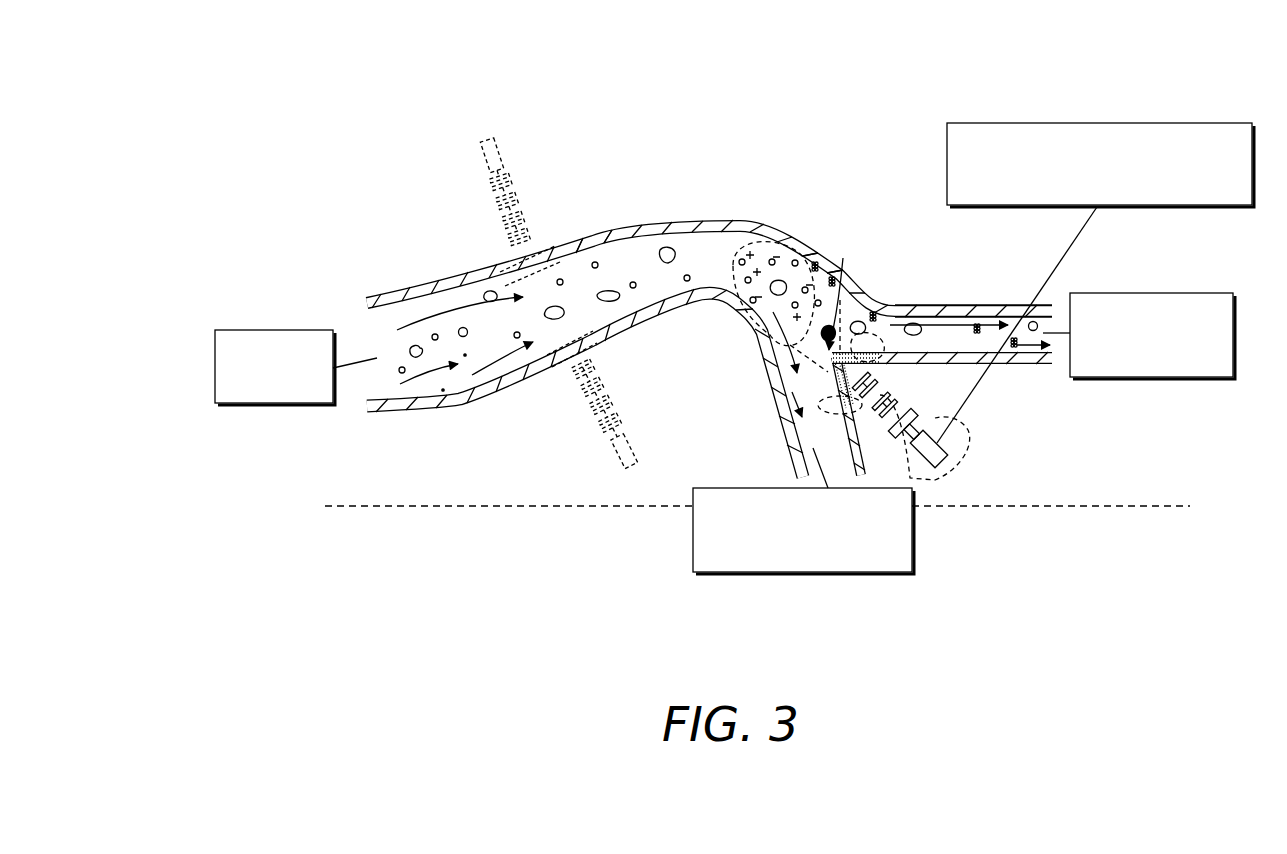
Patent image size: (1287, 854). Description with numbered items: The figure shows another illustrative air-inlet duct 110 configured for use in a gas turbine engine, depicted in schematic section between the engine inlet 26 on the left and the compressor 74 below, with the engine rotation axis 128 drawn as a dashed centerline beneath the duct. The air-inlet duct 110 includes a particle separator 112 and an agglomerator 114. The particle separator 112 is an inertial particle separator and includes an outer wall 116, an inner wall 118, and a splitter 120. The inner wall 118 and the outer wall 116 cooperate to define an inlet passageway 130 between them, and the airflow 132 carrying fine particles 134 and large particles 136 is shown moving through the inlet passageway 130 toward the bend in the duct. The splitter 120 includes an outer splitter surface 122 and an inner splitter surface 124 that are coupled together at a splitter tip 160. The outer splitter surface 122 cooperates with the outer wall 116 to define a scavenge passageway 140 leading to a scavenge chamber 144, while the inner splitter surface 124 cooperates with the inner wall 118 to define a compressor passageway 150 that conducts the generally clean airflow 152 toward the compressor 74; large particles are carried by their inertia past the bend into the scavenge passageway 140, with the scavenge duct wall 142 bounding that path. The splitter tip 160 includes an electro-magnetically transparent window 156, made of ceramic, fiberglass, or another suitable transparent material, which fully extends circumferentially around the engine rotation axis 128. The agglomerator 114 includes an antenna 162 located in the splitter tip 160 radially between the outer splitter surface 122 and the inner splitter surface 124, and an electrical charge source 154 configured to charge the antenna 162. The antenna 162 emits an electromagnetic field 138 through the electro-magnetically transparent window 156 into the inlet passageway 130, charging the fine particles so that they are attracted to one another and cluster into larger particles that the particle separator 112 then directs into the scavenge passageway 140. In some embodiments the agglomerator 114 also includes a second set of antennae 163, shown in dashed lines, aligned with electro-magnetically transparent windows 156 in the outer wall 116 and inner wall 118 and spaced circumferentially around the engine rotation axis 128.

The inlet 26 is at (274, 330).
The compressor 74 is at (913, 527).
The air-inlet duct 110 is at (735, 95).
The particle separator 112 is at (830, 240).
The agglomerator 114 is at (992, 437).
The outer wall 116 is at (466, 283).
The inner wall 118 is at (533, 376).
The splitter 120 is at (848, 300).
The outer splitter surface 122 is at (928, 352).
The inner splitter surface 124 is at (833, 420).
The engine rotation axis 128 is at (343, 512).
The inlet passageway 130 is at (425, 378).
The airflow 132 is at (470, 385).
The duct wall portion 134 is at (592, 252).
The particle 136 is at (665, 248).
The electromagnetic field 138 is at (800, 237).
The scavenge passageway 140 is at (1035, 353).
The scavenge duct upper wall 142 is at (942, 302).
The scavenge chamber 144 is at (1160, 295).
The compressor passageway 150 is at (797, 388).
The core flow path 152 is at (788, 337).
The electrical charge source 154 is at (1097, 122).
The electro-magnetically transparent window 156 is at (500, 238).
The splitter tip 160 is at (836, 252).
The antenna 162 is at (933, 422).
The second set of antennae 163 is at (497, 150).